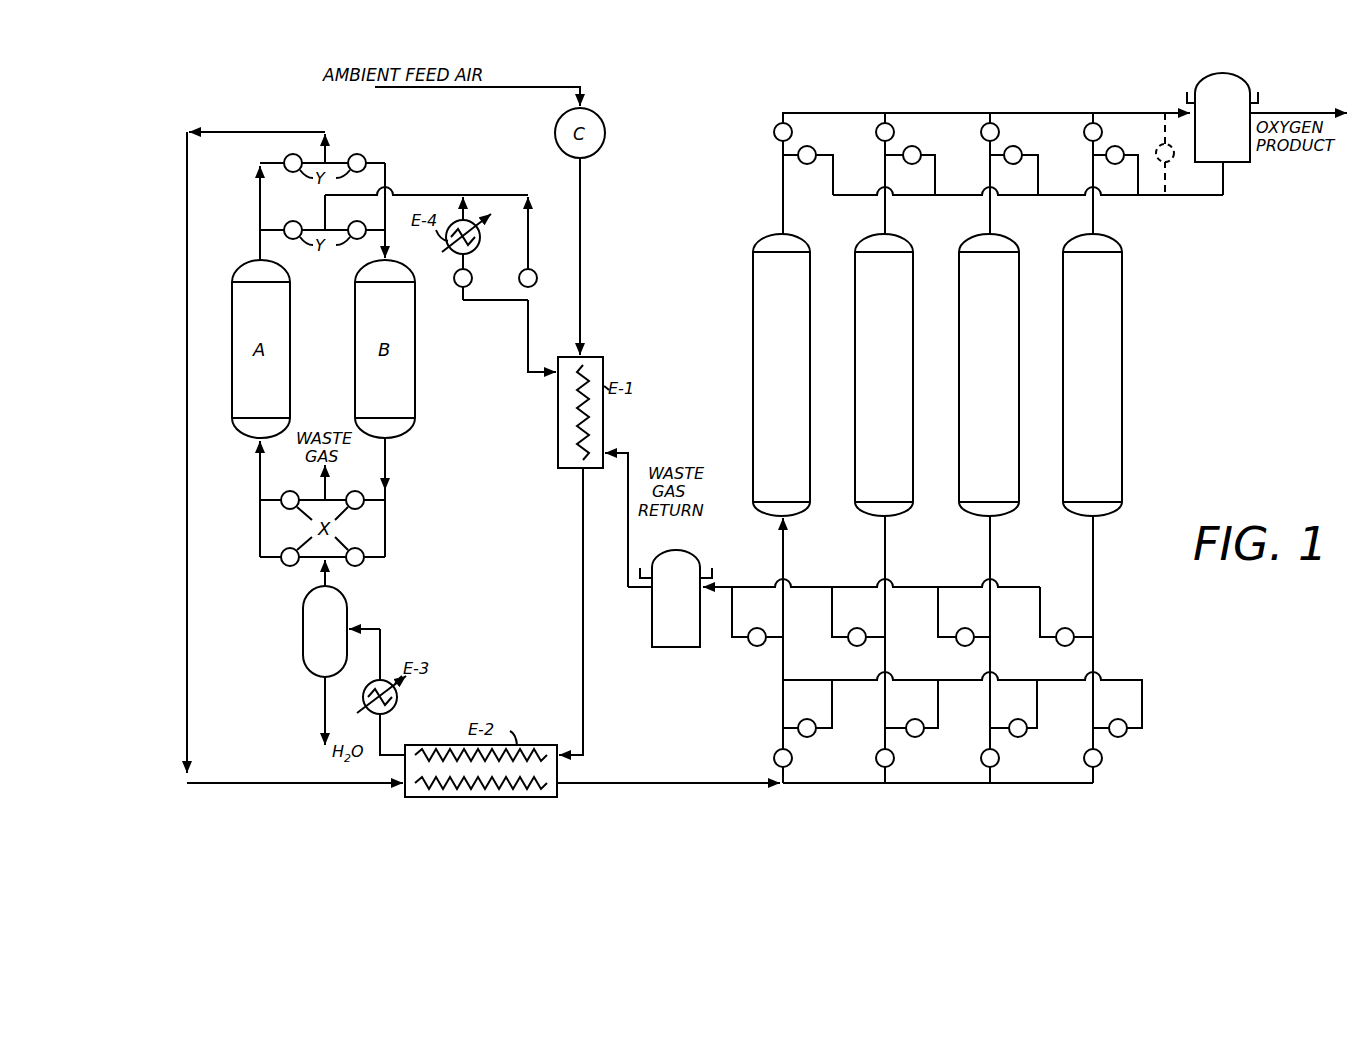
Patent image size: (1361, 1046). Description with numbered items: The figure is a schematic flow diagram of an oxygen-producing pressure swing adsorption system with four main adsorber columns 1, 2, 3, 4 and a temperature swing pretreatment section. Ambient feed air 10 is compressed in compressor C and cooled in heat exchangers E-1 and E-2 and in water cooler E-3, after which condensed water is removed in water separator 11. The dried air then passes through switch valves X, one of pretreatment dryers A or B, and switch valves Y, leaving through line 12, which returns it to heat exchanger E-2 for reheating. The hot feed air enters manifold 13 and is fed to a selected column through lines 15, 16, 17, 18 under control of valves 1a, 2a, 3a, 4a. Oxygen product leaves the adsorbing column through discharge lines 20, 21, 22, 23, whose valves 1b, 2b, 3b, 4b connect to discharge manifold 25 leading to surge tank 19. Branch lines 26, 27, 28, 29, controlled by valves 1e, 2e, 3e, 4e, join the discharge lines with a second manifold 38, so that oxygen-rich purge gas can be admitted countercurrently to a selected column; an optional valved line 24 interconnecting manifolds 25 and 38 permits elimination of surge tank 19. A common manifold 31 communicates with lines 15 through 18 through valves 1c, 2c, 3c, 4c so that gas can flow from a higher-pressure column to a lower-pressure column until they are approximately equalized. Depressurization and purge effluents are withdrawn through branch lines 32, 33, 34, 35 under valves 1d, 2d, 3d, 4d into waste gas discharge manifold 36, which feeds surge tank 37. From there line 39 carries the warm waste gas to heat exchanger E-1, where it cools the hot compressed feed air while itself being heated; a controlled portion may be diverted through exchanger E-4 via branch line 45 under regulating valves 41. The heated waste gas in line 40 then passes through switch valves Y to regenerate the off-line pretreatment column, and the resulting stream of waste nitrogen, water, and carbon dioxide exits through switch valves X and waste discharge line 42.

The main adsorber column 1 is at (781, 375).
The main adsorber column 2 is at (884, 375).
The main adsorber column 3 is at (989, 375).
The main adsorber column 4 is at (1092, 375).
The ambient feed air line 10 is at (430, 88).
The water separator 11 is at (303, 624).
The line 12 is at (287, 130).
The manifold 13 is at (925, 785).
The line 15 is at (783, 714).
The line 16 is at (885, 714).
The line 17 is at (990, 714).
The line 18 is at (1093, 714).
The surge tank 19 is at (1229, 142).
The discharge line 20 is at (783, 218).
The discharge line 21 is at (885, 224).
The discharge line 22 is at (990, 224).
The discharge line 23 is at (1093, 224).
The valved line 24 is at (1172, 160).
The discharge manifold 25 is at (960, 113).
The branch line 26 is at (834, 170).
The branch line 27 is at (936, 170).
The branch line 28 is at (1039, 170).
The branch line 29 is at (1140, 195).
The common manifold 31 is at (1142, 716).
The branch line 32 is at (731, 622).
The branch line 33 is at (831, 621).
The branch line 34 is at (937, 621).
The branch line 35 is at (1037, 618).
The waste gas discharge manifold 36 is at (755, 568).
The surge tank 37 is at (652, 628).
The second manifold 38 is at (1200, 196).
The line 39 is at (626, 454).
The line 40 is at (420, 195).
The regulating valves 41 is at (518, 283).
The waste discharge line 42 is at (320, 488).
The branch line 45 is at (508, 301).
The valve 1a is at (792, 759).
The valve 2a is at (894, 759).
The valve 3a is at (999, 759).
The valve 4a is at (1102, 759).
The valve 1b is at (774, 131).
The valve 2b is at (876, 133).
The valve 3b is at (981, 133).
The valve 4b is at (1084, 132).
The valve 1c is at (817, 714).
The valve 2c is at (924, 714).
The valve 3c is at (1027, 714).
The valve 4c is at (1127, 714).
The valve 1d is at (769, 624).
The valve 2d is at (869, 624).
The valve 3d is at (976, 624).
The valve 4d is at (1077, 624).
The valve 1e is at (817, 150).
The valve 2e is at (903, 146).
The valve 3e is at (1007, 146).
The valve 4e is at (1108, 146).